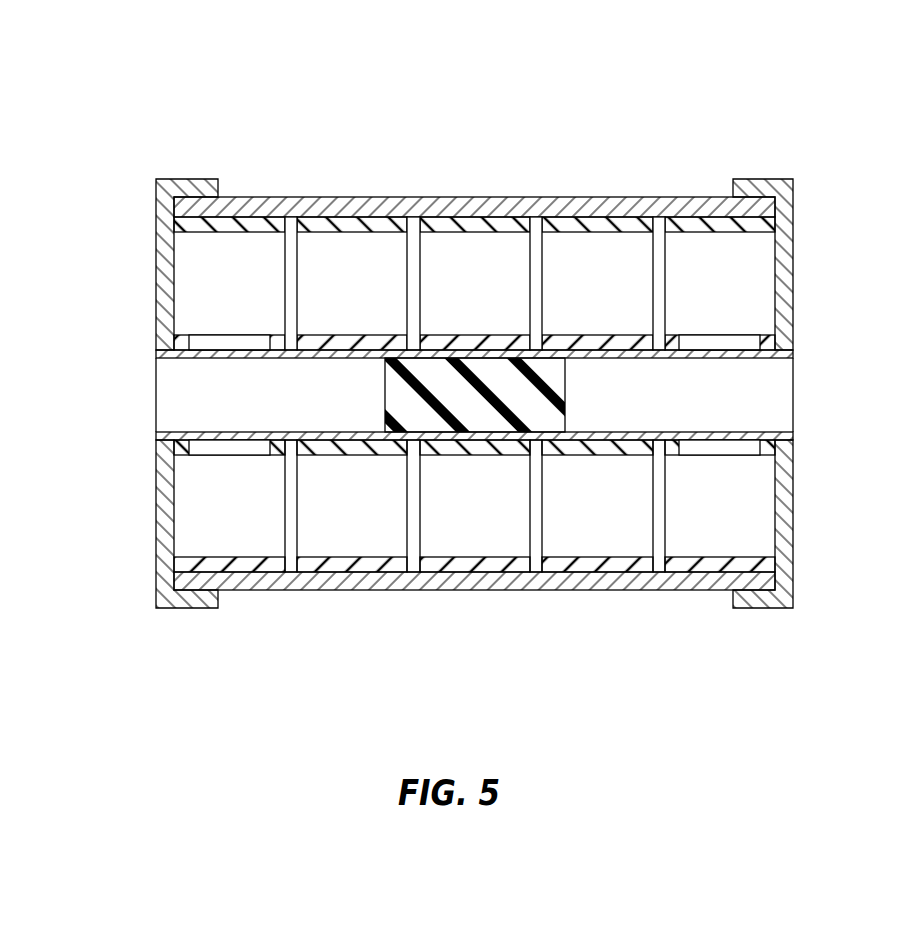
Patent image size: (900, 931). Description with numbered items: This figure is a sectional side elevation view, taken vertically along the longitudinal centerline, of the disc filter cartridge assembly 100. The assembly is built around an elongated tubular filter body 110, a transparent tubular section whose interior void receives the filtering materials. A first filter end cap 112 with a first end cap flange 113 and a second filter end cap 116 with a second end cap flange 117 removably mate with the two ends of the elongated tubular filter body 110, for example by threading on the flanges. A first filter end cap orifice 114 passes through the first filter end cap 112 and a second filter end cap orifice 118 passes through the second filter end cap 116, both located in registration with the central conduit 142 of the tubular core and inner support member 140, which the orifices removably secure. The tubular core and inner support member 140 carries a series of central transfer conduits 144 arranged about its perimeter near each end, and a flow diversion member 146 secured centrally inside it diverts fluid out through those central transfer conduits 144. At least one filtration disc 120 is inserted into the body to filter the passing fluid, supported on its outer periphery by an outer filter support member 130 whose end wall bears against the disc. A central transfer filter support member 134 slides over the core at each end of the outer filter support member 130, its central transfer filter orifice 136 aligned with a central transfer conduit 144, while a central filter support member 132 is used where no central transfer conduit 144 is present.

The disc filter cartridge assembly 100 is at (109, 101).
The elongated tubular filter body 110 is at (523, 196).
The first filter end cap 112 is at (793, 538).
The first end cap flange 113 is at (750, 609).
The first filter end cap orifice 114 is at (793, 437).
The second filter end cap 116 is at (156, 538).
The second end cap flange 117 is at (203, 609).
The second filter end cap orifice 118 is at (156, 437).
The filtration disc 120 is at (413, 268).
The outer filter support member 130 is at (241, 578).
The central filter support member 132 is at (338, 334).
The central transfer filter support member 134 is at (273, 334).
The central transfer filter orifice 136 is at (232, 456).
The tubular core and inner support member 140 is at (362, 431).
The central conduit 142 is at (156, 395).
The central transfer conduits 144 is at (232, 431).
The flow diversion member 146 is at (565, 388).